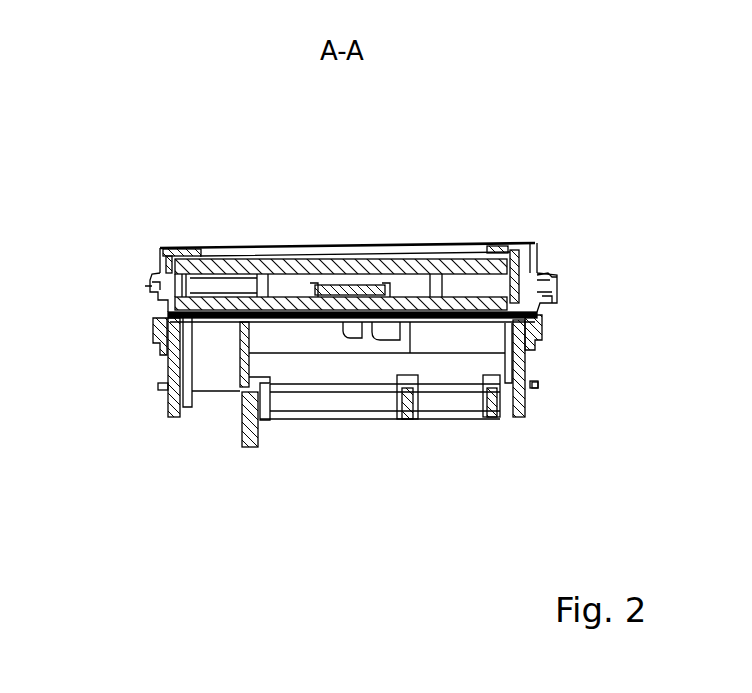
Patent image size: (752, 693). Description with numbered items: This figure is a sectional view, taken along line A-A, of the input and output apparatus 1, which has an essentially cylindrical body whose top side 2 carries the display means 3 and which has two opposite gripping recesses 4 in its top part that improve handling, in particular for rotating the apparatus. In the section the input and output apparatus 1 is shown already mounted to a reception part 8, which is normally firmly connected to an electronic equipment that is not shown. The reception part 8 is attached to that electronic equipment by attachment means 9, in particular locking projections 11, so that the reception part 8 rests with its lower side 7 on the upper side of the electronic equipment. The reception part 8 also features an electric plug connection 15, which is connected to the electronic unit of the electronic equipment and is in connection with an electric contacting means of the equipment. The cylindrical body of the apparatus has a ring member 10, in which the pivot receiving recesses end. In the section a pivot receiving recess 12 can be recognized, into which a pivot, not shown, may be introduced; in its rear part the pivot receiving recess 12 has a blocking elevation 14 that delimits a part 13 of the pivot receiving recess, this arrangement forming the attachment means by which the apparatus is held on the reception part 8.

The input and output apparatus 1 is at (582, 291).
The top side 2 is at (193, 250).
The display means 3 is at (442, 262).
The gripping recesses 4 is at (155, 282).
The lower side 7 is at (490, 425).
The reception part 8 is at (528, 368).
The attachment means 9 is at (540, 383).
The ring member 10 is at (168, 413).
The locking projections 11 is at (158, 390).
The pivot receiving recess 12 is at (397, 338).
The part of the pivot receiving recess 13 is at (351, 330).
The blocking elevation 14 is at (372, 275).
The electric plug connection 15 is at (238, 437).